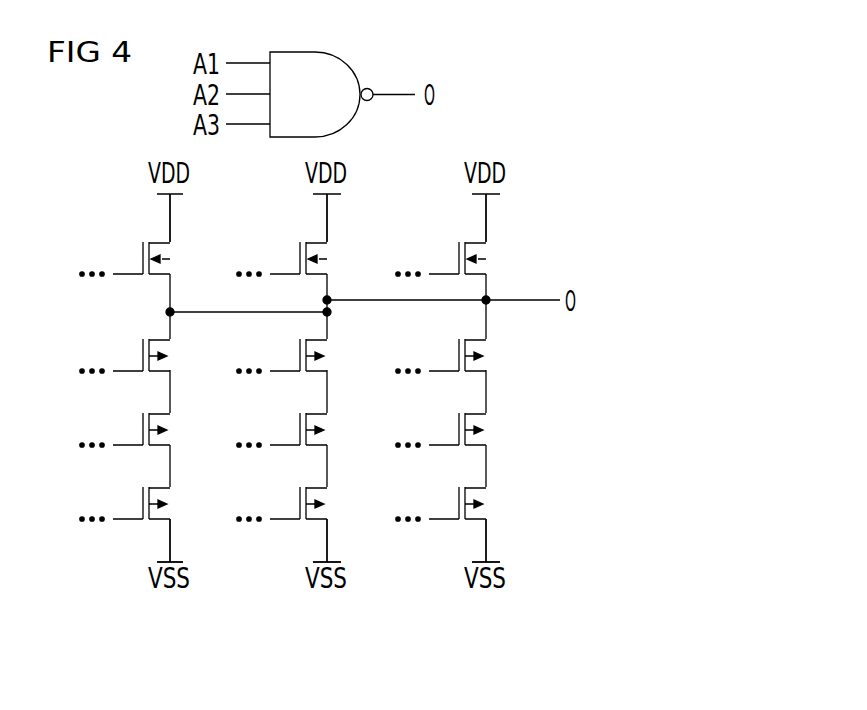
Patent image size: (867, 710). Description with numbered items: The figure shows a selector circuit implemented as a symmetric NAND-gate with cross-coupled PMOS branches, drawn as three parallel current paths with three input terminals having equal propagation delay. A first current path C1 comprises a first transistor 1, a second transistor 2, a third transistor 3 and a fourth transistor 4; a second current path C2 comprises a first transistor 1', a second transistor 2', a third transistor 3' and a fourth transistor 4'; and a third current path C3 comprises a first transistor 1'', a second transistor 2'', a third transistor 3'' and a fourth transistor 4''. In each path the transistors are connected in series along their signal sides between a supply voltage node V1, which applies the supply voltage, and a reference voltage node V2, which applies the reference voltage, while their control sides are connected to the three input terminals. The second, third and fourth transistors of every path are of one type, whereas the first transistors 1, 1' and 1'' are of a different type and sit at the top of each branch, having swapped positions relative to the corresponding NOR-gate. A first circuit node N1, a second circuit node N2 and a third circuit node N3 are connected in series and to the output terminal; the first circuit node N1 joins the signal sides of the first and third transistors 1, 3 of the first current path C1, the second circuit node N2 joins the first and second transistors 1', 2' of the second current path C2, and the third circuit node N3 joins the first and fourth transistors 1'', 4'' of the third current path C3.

The first transistor 1 is at (107, 259).
The second transistor 2 is at (107, 430).
The third transistor 3 is at (107, 356).
The fourth transistor 4 is at (107, 504).
The first transistor 1' is at (264, 259).
The second transistor 2' is at (264, 356).
The third transistor 3' is at (264, 504).
The fourth transistor 4' is at (264, 430).
The first transistor 1'' is at (423, 259).
The second transistor 2'' is at (423, 504).
The third transistor 3'' is at (423, 430).
The fourth transistor 4'' is at (423, 356).
The supply voltage node V1 is at (481, 222).
The reference voltage node V2 is at (482, 542).
The first circuit node N1 is at (176, 317).
The second circuit node N2 is at (333, 306).
The third circuit node N3 is at (491, 294).
The first current path C1 is at (138, 600).
The second current path C2 is at (295, 600).
The third current path C3 is at (454, 600).